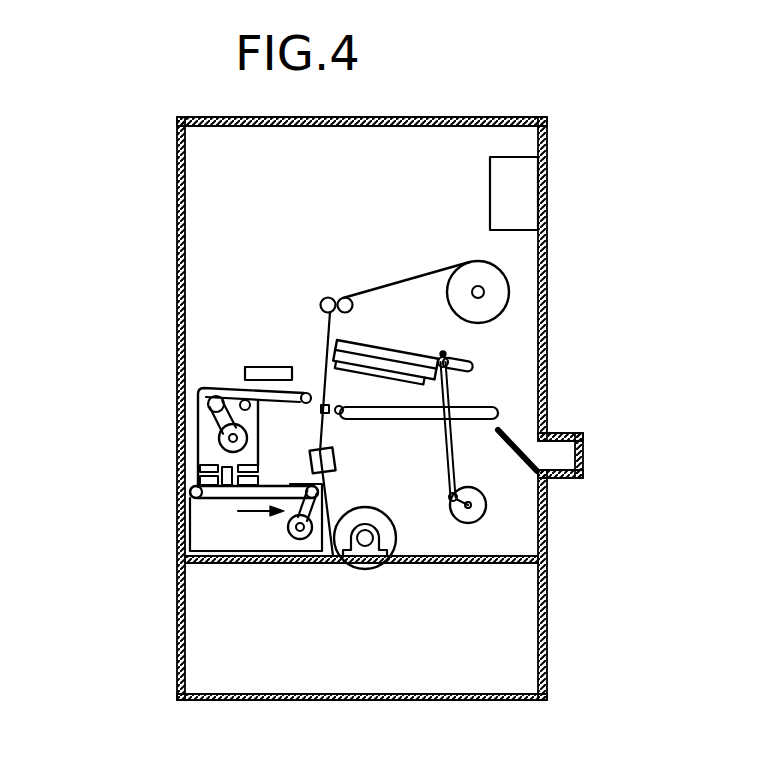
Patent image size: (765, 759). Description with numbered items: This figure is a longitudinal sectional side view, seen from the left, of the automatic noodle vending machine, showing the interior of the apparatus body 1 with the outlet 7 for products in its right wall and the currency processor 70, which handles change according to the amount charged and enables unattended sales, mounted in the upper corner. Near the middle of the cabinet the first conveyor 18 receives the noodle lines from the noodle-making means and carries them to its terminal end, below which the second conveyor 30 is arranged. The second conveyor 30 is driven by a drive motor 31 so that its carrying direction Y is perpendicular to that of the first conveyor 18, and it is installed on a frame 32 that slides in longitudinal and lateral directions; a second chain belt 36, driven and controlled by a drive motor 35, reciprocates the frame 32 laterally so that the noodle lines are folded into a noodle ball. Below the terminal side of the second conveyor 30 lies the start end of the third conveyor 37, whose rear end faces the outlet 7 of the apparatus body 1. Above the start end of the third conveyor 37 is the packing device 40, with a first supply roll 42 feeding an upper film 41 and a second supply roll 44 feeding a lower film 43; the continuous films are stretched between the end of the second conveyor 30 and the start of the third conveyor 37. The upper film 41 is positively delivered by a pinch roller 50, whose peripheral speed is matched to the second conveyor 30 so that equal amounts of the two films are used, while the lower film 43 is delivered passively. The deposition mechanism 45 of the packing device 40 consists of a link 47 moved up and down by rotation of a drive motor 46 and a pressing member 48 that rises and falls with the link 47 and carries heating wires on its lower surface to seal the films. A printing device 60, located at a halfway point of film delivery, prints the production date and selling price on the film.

The apparatus body 1 is at (172, 190).
The outlet 7 is at (563, 458).
The first conveyor 18 is at (270, 366).
The second conveyor 30 is at (225, 387).
The drive motor 31 is at (220, 444).
The frame 32 is at (206, 458).
The drive motor 35 is at (300, 545).
The second chain belt 36 is at (232, 518).
The third conveyor 37 is at (425, 420).
The packing device 40 is at (482, 358).
The upper film 41 is at (382, 284).
The first supply roll 42 is at (497, 292).
The lower film 43 is at (331, 479).
The second supply roll 44 is at (367, 570).
The deposition mechanism 45 is at (392, 341).
The drive motor 46 is at (488, 503).
The link 47 is at (452, 440).
The pressing member 48 is at (378, 380).
The pinch roller 50 is at (331, 297).
The printing device 60 is at (310, 458).
The currency processor 70 is at (527, 186).